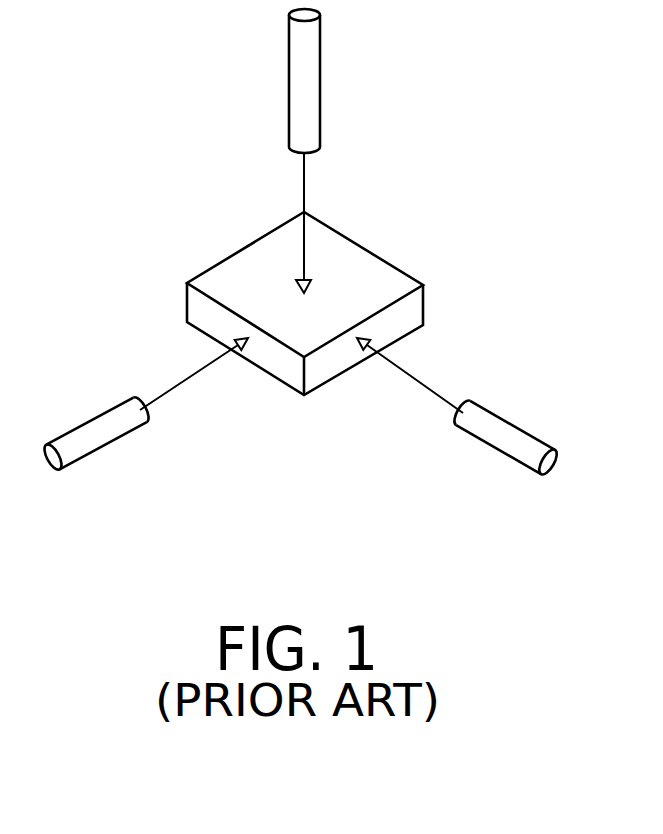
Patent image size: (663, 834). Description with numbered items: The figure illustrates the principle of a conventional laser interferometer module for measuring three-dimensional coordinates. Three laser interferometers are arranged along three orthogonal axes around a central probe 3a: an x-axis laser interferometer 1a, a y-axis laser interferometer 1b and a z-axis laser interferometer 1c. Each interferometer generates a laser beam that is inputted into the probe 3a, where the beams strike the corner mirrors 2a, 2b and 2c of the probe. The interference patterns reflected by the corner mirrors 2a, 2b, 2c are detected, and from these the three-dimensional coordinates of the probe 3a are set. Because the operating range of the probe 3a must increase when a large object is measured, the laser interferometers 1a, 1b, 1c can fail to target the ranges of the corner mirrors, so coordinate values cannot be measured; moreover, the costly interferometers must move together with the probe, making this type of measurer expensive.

The x-axis laser interferometer 1a is at (105, 433).
The y-axis laser interferometer 1b is at (503, 443).
The z-axis laser interferometer 1c is at (317, 89).
The corner mirror 2a is at (243, 337).
The corner mirror 2b is at (365, 347).
The corner mirror 2c is at (312, 282).
The probe 3a is at (258, 272).